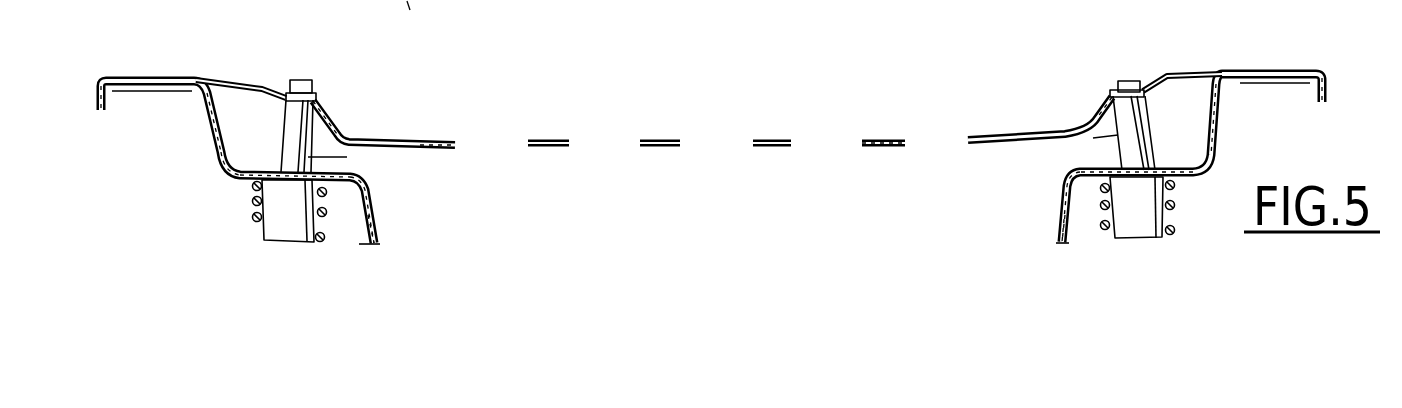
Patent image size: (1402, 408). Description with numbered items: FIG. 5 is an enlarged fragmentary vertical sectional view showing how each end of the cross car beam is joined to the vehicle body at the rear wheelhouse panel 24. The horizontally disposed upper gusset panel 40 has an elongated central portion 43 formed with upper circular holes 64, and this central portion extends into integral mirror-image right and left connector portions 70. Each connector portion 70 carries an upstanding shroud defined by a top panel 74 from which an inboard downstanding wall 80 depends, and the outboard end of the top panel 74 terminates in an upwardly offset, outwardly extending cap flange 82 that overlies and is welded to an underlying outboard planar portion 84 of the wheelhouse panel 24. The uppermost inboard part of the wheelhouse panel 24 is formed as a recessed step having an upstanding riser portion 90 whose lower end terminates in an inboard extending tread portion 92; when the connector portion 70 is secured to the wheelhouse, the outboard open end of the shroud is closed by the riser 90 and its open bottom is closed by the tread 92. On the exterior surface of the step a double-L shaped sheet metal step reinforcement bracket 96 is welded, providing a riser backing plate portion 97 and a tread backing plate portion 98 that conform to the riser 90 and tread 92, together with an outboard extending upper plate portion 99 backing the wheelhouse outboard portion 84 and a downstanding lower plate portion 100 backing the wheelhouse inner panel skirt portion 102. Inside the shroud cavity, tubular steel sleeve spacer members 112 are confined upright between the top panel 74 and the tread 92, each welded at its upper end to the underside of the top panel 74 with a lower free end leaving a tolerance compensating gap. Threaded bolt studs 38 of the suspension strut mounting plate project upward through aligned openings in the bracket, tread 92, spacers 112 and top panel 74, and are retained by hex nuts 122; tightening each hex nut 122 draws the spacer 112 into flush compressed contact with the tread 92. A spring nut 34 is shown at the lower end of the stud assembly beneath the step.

The wheelhouse panel 24 is at (386, 224).
The spring nut 34 is at (242, 217).
The threaded bolt stud 38 is at (300, 80).
The upper gusset panel 40 is at (876, 122).
The elongated central portion 43 is at (557, 132).
The upper circular hole 64 is at (453, 145).
The connector portion 70 is at (337, 89).
The top panel 74 is at (286, 100).
The inboard downstanding wall 80 is at (333, 118).
The cap flange 82 is at (125, 72).
The outboard planar portion 84 is at (158, 78).
The riser portion 90 is at (228, 80).
The tread portion 92 is at (245, 168).
The step reinforcement bracket 96 is at (207, 172).
The riser backing plate portion 97 is at (208, 132).
The tread backing plate portion 98 is at (1060, 242).
The upper plate portion 99 is at (130, 88).
The lower plate portion 100 is at (357, 233).
The inner panel skirt portion 102 is at (369, 203).
The sleeve spacer member 112 is at (317, 155).
The hex nut 122 is at (318, 95).